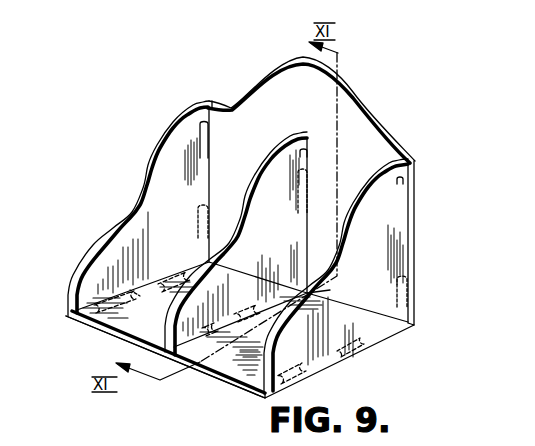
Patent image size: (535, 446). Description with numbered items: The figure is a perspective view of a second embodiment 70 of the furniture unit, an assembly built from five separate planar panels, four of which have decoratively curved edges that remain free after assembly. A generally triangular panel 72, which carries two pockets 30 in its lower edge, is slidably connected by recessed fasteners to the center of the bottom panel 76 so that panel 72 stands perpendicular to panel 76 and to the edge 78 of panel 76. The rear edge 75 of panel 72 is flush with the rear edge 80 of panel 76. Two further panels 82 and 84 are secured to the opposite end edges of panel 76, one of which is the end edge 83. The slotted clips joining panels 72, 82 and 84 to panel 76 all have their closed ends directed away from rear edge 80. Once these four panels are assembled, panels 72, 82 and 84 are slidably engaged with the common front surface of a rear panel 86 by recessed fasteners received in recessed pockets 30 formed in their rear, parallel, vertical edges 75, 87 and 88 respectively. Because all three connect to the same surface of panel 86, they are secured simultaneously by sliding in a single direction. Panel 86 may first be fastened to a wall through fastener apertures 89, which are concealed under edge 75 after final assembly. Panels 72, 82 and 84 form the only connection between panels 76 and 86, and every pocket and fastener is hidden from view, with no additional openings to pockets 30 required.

The pockets 30 is at (340, 355).
The second embodiment of the furniture unit 70 is at (396, 112).
The generally triangular panel 72 is at (257, 281).
The rear edge of panel 72 75 is at (306, 215).
The bottom panel 76 is at (100, 323).
The edge of panel 76 78 is at (220, 372).
The rear edge of panel 76 80 is at (333, 287).
The panel 82 is at (173, 226).
The end edge of panel 76 83 is at (138, 290).
The panel 84 is at (356, 313).
The rear panel 86 is at (311, 100).
The rear vertical edge of panel 82 87 is at (212, 173).
The rear vertical edge of panel 84 88 is at (408, 240).
The fastener apertures 89 is at (306, 139).